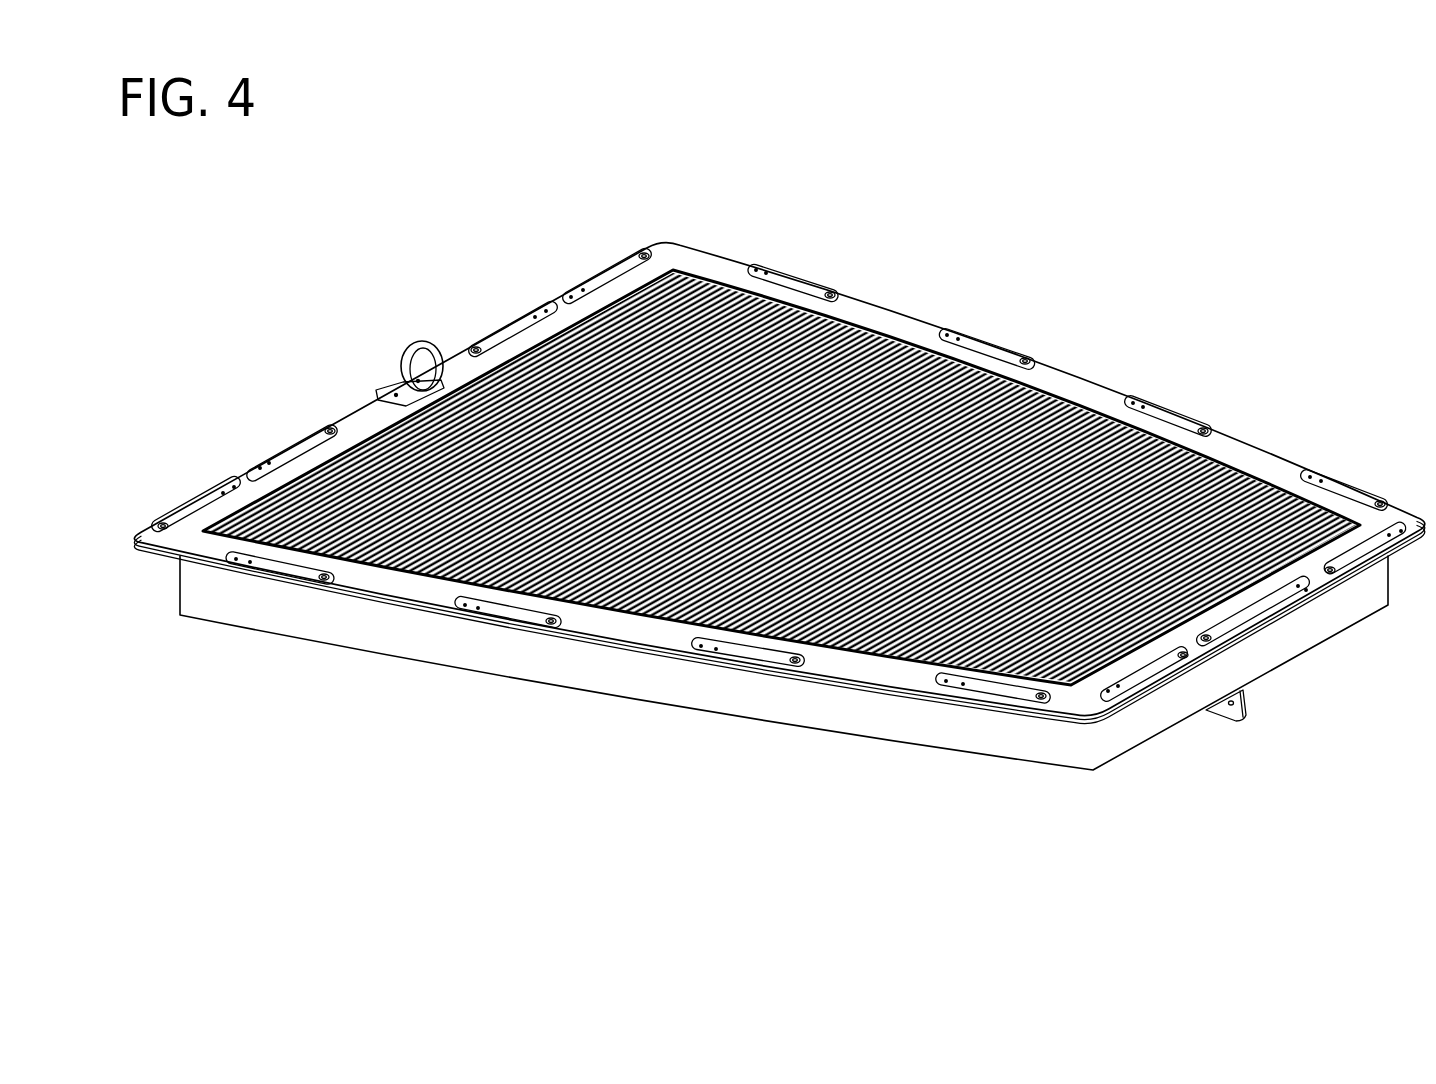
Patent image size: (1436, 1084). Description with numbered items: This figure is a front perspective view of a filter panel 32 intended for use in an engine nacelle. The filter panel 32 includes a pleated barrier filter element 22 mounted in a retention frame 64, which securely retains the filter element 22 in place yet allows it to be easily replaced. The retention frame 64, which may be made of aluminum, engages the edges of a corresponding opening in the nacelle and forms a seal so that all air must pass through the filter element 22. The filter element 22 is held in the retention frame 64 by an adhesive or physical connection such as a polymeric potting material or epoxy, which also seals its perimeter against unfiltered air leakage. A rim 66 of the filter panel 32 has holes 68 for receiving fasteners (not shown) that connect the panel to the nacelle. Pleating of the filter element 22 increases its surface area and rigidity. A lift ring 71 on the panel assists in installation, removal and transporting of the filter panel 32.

The pleated barrier filter element 22 is at (1040, 405).
The filter panel 32 is at (877, 295).
The retention frame 64 is at (597, 692).
The rim 66 is at (553, 627).
The holes 68 is at (515, 615).
The lift ring 71 is at (412, 333).